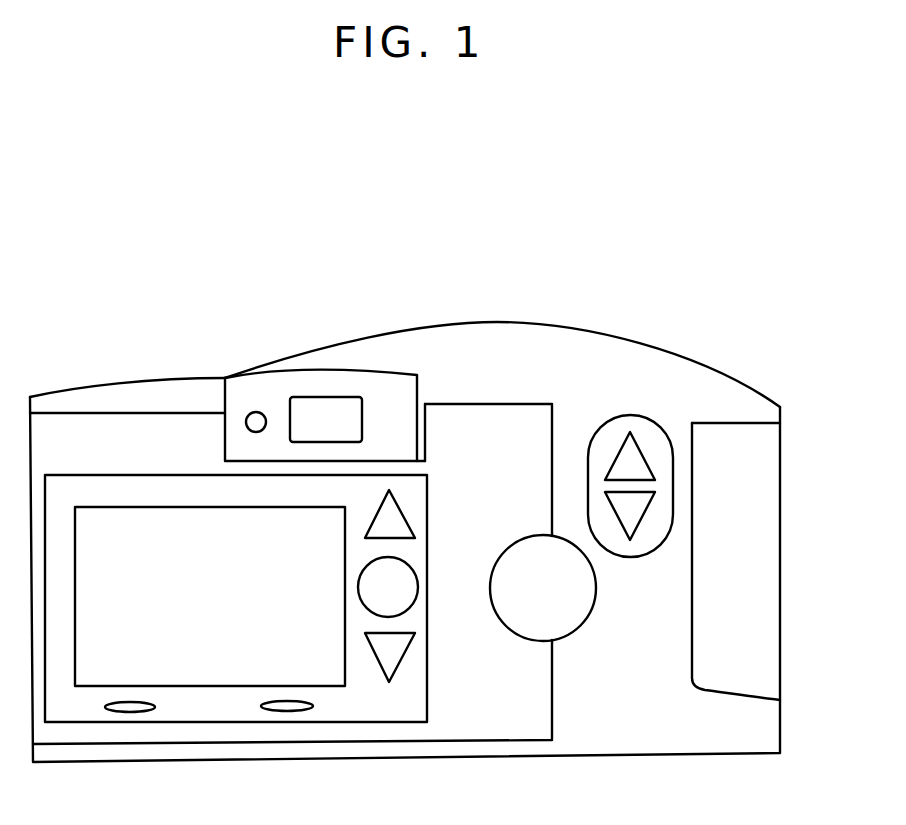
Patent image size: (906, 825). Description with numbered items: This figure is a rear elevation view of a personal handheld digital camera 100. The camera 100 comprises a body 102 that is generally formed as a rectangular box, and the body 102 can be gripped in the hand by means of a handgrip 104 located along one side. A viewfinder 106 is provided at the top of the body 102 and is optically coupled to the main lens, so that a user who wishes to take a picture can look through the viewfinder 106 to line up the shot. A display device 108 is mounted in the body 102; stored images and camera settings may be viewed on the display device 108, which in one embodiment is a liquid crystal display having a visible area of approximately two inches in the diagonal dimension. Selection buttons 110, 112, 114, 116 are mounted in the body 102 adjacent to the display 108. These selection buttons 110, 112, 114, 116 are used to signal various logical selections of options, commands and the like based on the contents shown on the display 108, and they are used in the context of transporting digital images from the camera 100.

The personal handheld digital camera 100 is at (452, 540).
The body 102 is at (642, 338).
The handgrip 104 is at (765, 537).
The viewfinder 106 is at (290, 397).
The display device 108 is at (220, 608).
The selection button 110 is at (390, 680).
The selection button 112 is at (397, 597).
The selection button 114 is at (116, 713).
The selection button 116 is at (290, 712).